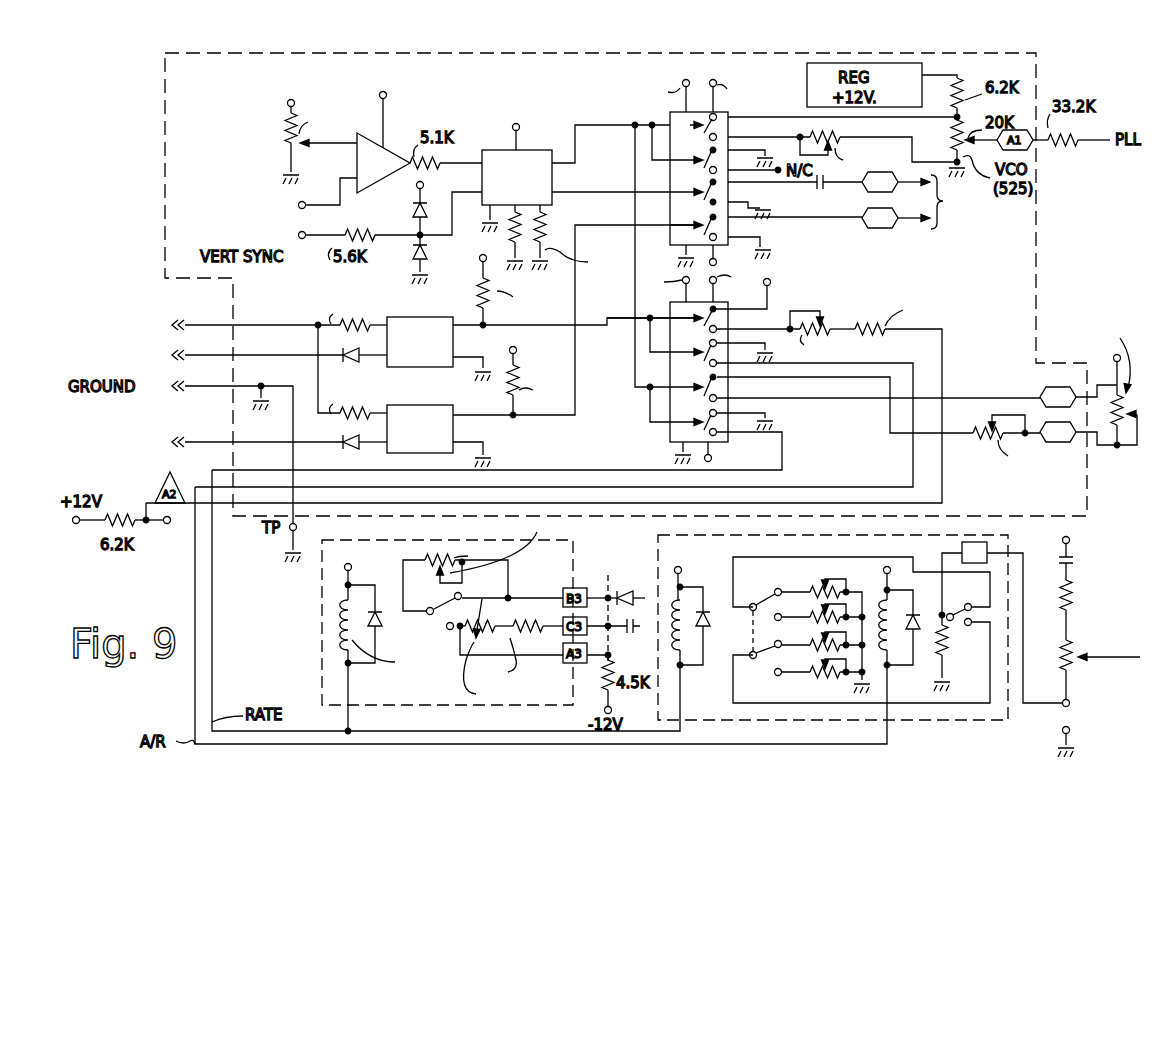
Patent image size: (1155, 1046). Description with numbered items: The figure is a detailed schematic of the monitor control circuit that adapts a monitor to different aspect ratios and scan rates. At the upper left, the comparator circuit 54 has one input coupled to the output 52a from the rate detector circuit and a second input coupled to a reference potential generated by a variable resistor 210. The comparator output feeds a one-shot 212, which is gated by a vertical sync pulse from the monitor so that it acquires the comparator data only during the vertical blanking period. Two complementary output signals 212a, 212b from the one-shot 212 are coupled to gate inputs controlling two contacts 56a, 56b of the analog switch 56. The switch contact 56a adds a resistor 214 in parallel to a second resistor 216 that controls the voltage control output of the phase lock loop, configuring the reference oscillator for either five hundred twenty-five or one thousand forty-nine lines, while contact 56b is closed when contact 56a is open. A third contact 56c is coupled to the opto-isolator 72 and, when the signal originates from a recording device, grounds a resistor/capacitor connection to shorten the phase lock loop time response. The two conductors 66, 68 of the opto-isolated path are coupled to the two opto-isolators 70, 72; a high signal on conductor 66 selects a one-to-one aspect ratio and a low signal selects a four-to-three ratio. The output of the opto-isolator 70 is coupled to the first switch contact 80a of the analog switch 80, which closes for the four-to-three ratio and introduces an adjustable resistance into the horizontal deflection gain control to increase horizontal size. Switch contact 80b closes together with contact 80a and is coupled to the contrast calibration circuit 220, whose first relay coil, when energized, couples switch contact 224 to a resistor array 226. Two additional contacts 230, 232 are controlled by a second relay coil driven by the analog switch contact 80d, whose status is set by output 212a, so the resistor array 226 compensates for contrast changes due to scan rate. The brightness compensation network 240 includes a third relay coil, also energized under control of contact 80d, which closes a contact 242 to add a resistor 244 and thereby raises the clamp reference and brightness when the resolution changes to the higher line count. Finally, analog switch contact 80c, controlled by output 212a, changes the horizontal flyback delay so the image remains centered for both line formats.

The variable resistor 210 is at (280, 132).
The comparator circuit 54 is at (390, 150).
The output from the rate detector circuit 52a is at (298, 205).
The one-shot 212 is at (534, 157).
The output signal of the one-shot 212a is at (596, 140).
The complementary output signal of the one-shot 212b is at (580, 204).
The analog switch 56 is at (670, 222).
The switch contact 56a is at (730, 123).
The switch contact 56b is at (745, 203).
The third switch contact 56c is at (740, 236).
The resistor 214 is at (846, 131).
The second resistor 216 is at (972, 211).
The conductor 66 is at (250, 358).
The conductor 68 is at (199, 441).
The opto-isolator 70 is at (416, 325).
The opto-isolator 72 is at (455, 430).
The analog switch 80 is at (720, 444).
The first switch contact 80a is at (718, 327).
The switch contact 80b is at (707, 357).
The analog switch contact 80c is at (730, 387).
The analog switch contact 80d is at (725, 428).
The brightness compensation network 240 is at (312, 628).
The resistor 244 is at (425, 559).
The contact 242 is at (433, 618).
The contrast calibration circuit 220 is at (925, 722).
The switch contact 232 is at (752, 594).
The switch contact 230 is at (750, 660).
The resistor array 226 is at (832, 680).
The switch contact 224 is at (958, 606).